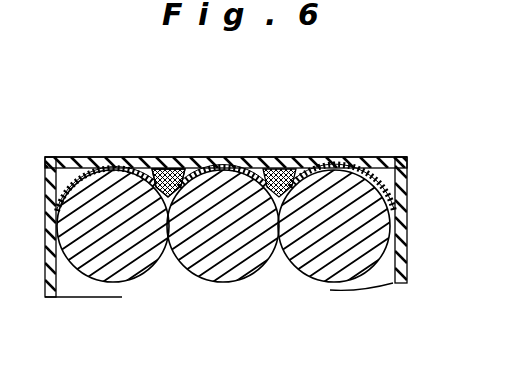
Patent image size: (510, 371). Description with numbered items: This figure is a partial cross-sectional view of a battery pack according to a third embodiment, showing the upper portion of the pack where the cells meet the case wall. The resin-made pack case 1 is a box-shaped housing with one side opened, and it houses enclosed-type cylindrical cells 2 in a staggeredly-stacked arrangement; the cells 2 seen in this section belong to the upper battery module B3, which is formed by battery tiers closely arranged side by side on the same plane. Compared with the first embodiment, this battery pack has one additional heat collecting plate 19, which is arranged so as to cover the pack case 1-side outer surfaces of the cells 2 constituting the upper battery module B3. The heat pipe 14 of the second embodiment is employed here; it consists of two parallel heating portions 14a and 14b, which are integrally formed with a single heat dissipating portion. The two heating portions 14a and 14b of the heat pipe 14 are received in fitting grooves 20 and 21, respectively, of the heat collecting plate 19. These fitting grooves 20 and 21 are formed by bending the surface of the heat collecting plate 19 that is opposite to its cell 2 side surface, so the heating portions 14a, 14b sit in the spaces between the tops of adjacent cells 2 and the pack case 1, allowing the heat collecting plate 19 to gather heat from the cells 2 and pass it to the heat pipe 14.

The pack case 1 is at (297, 160).
The cell 2 is at (128, 257).
The heat pipe 14 is at (175, 172).
The heating portion 14a is at (163, 172).
The heating portion 14b is at (278, 172).
The heat collecting plate 19 is at (383, 158).
The fitting groove 20 is at (205, 168).
The fitting groove 21 is at (290, 168).
The upper battery module B3 is at (396, 263).